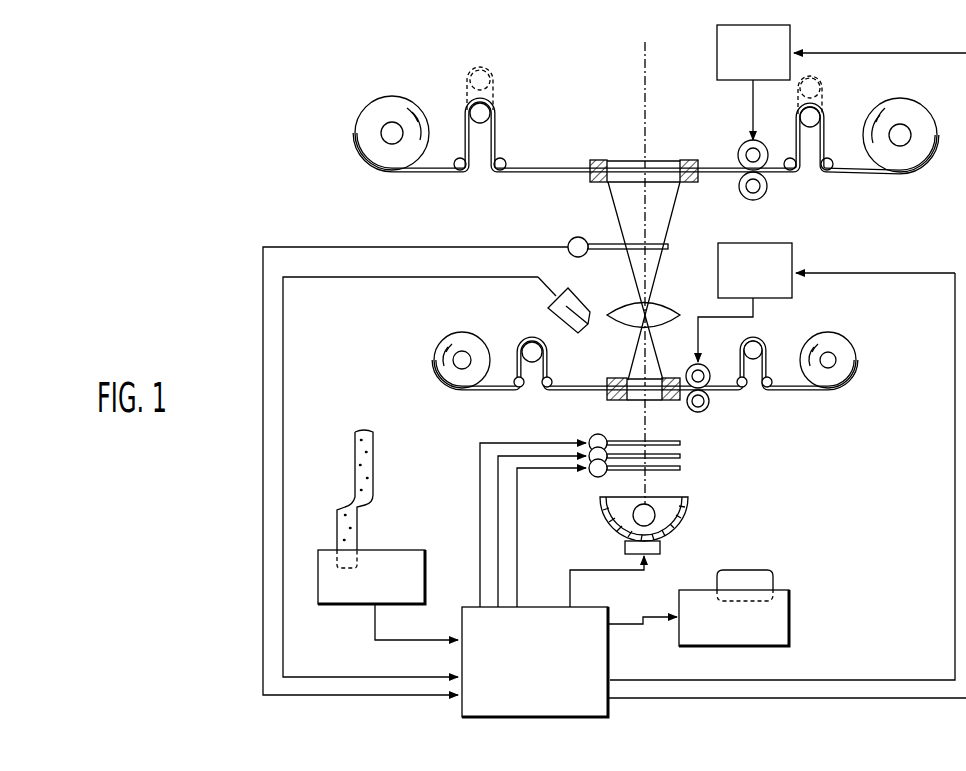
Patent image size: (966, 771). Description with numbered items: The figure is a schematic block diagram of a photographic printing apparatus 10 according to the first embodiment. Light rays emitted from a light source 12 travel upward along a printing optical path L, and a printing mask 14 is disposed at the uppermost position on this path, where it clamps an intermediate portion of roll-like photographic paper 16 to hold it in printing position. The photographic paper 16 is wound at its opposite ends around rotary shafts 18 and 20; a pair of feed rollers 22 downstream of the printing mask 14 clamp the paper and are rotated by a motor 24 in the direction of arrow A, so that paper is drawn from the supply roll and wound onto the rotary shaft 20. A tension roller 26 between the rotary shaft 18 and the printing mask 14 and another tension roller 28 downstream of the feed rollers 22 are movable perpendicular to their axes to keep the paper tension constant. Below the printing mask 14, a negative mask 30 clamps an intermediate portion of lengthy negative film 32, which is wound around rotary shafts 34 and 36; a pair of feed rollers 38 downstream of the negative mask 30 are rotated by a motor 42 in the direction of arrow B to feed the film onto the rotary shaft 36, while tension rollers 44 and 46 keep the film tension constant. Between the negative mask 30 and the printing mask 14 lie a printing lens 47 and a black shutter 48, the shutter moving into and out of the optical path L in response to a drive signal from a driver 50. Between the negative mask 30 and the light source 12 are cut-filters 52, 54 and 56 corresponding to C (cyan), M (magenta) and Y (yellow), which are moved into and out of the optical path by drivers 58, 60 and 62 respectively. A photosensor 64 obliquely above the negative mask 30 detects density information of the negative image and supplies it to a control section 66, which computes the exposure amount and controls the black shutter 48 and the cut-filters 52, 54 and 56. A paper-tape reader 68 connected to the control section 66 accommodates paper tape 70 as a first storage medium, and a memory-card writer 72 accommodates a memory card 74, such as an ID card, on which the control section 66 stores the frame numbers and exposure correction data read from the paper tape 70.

The photographic printing apparatus 10 is at (572, 84).
The light source 12 is at (689, 508).
The printing mask 14 is at (688, 160).
The roll-like photographic paper 16 is at (558, 168).
The rotary shaft 18 is at (388, 128).
The rotary shaft 20 is at (903, 126).
The feed rollers 22 is at (768, 192).
The motor 24 is at (791, 38).
The tension roller 26 is at (486, 113).
The tension roller 28 is at (816, 116).
The negative mask 30 is at (619, 380).
The negative film 32 is at (581, 386).
The rotary shaft 34 is at (452, 365).
The rotary shaft 36 is at (838, 362).
The feed rollers 38 is at (713, 407).
The motor 42 is at (793, 259).
The tension roller 44 is at (528, 348).
The tension roller 46 is at (759, 350).
The printing lens 47 is at (683, 290).
The black shutter 48 is at (607, 243).
The driver 50 is at (569, 241).
The cut-filter 52 is at (630, 440).
The cut-filter 54 is at (617, 463).
The cut-filter 56 is at (644, 478).
The driver 58 is at (600, 435).
The driver 60 is at (590, 443).
The driver 62 is at (590, 470).
The photosensor 64 is at (548, 309).
The control section 66 is at (610, 668).
The paper-tape reader 68 is at (385, 552).
The paper tape 70 is at (375, 475).
The memory-card writer 72 is at (790, 622).
The memory card 74 is at (755, 570).
The printing optical path L is at (645, 74).
The arrow A is at (734, 160).
The arrow B is at (688, 368).
The cyan C is at (693, 441).
The magenta M is at (706, 455).
The yellow Y is at (692, 474).